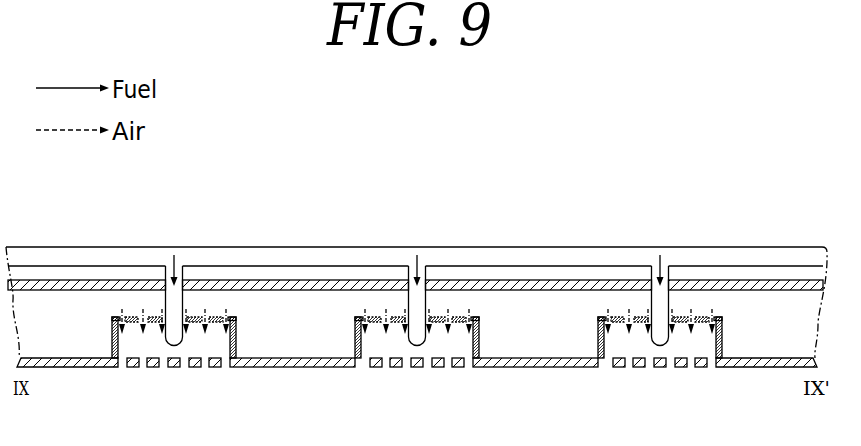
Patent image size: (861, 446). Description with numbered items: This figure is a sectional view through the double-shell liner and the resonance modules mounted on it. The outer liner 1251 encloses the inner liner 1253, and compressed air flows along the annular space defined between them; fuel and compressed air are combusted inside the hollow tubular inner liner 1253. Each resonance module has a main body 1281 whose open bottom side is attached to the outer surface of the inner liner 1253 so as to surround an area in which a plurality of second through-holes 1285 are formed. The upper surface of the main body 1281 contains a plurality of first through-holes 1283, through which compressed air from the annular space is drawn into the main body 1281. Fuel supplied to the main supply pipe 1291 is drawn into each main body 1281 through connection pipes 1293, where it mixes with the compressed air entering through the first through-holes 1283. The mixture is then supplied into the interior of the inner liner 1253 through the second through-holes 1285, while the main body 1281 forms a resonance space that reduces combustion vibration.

The outer liner 1251 is at (559, 286).
The inner liner 1253 is at (757, 364).
The main body 1281 is at (111, 342).
The first through-holes 1283 is at (212, 315).
The second through-holes 1285 is at (184, 364).
The main supply pipe 1291 is at (332, 258).
The connection pipes 1293 is at (173, 303).